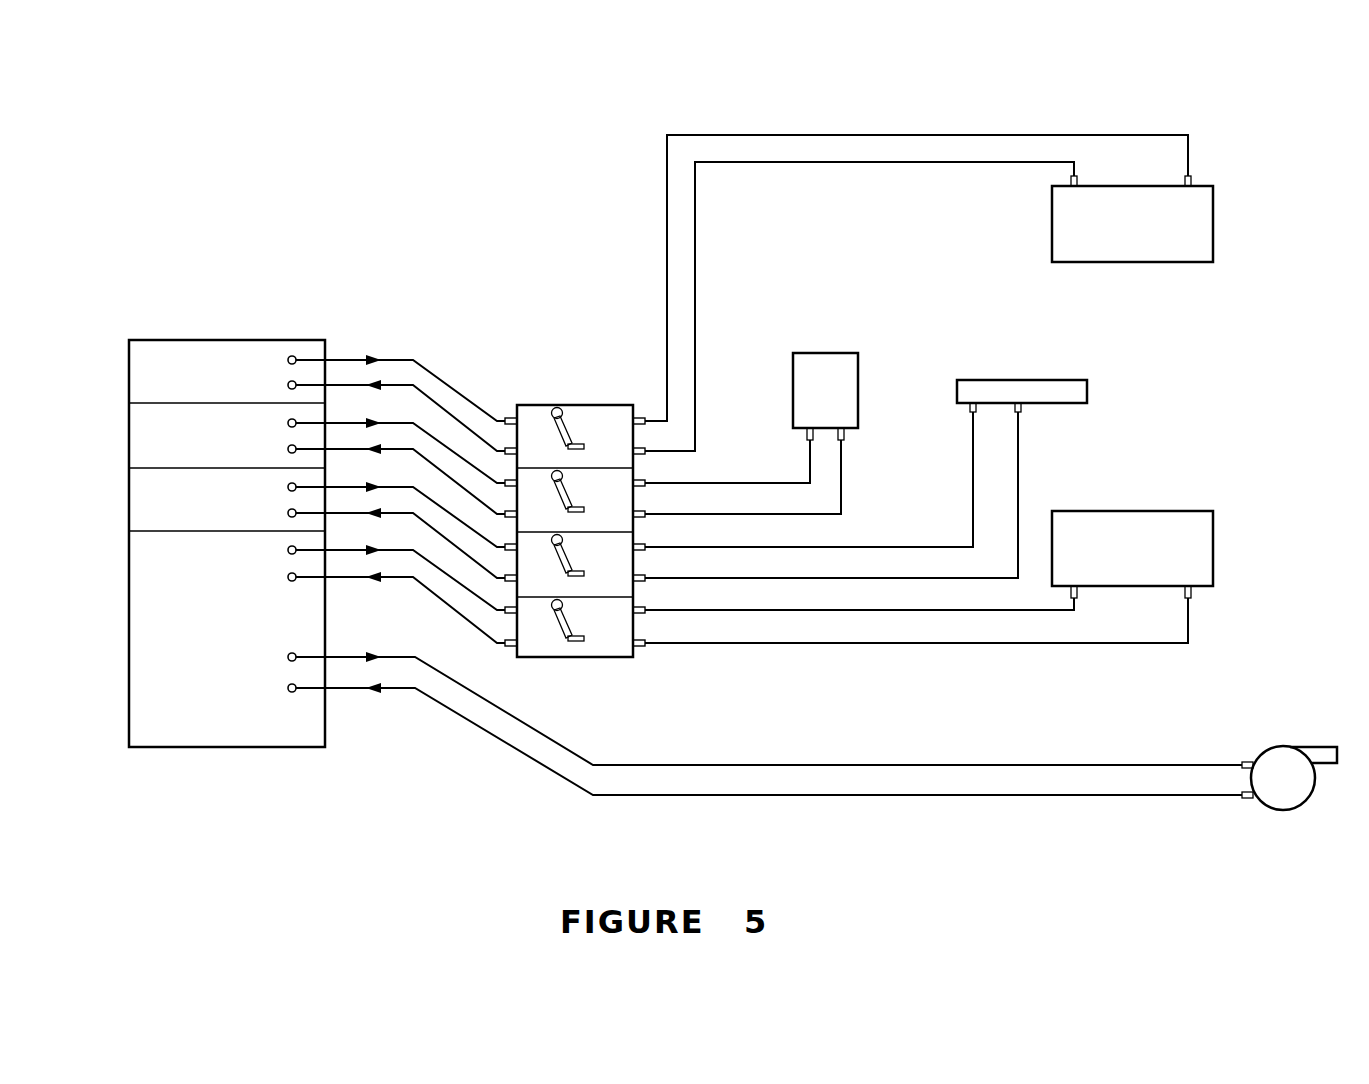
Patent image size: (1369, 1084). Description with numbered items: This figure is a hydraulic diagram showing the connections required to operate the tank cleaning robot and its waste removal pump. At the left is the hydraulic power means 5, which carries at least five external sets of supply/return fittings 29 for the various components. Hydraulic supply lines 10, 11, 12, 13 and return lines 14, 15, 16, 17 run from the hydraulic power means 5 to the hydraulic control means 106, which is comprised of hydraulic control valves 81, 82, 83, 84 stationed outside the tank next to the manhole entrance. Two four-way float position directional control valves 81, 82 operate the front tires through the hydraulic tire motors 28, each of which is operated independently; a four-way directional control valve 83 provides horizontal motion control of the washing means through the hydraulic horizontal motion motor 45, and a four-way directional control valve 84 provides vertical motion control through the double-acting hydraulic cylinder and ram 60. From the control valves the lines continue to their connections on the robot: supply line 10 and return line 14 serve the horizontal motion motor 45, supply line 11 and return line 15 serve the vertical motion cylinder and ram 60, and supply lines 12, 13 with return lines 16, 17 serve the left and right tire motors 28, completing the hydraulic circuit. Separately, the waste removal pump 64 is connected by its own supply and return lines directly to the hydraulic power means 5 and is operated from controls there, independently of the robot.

The hydraulic power means 5 is at (280, 310).
The hydraulic control means 106 is at (574, 336).
The 4-way float position directional control valve 81 is at (601, 423).
The 4-way directional control valve 83 is at (622, 508).
The 4-way directional control valve 84 is at (622, 571).
The 4-way float position directional control valve 82 is at (612, 638).
The hydraulic supply line 12 is at (1118, 135).
The hydraulic return line 16 is at (931, 163).
The hydraulic return line 14 is at (810, 466).
The hydraulic supply line 10 is at (843, 473).
The hydraulic return line 15 is at (973, 493).
The hydraulic supply line 11 is at (1020, 477).
The hydraulic return line 17 is at (1075, 609).
The hydraulic supply line 13 is at (1008, 644).
The hydraulic tire motor 28 is at (1213, 232).
The hydraulic horizontal motion motor 45 is at (826, 353).
The double-acting hydraulic cylinder and ram 60 is at (1025, 380).
The supply/return fittings 29 is at (289, 660).
The waste removal pump 64 is at (1276, 748).